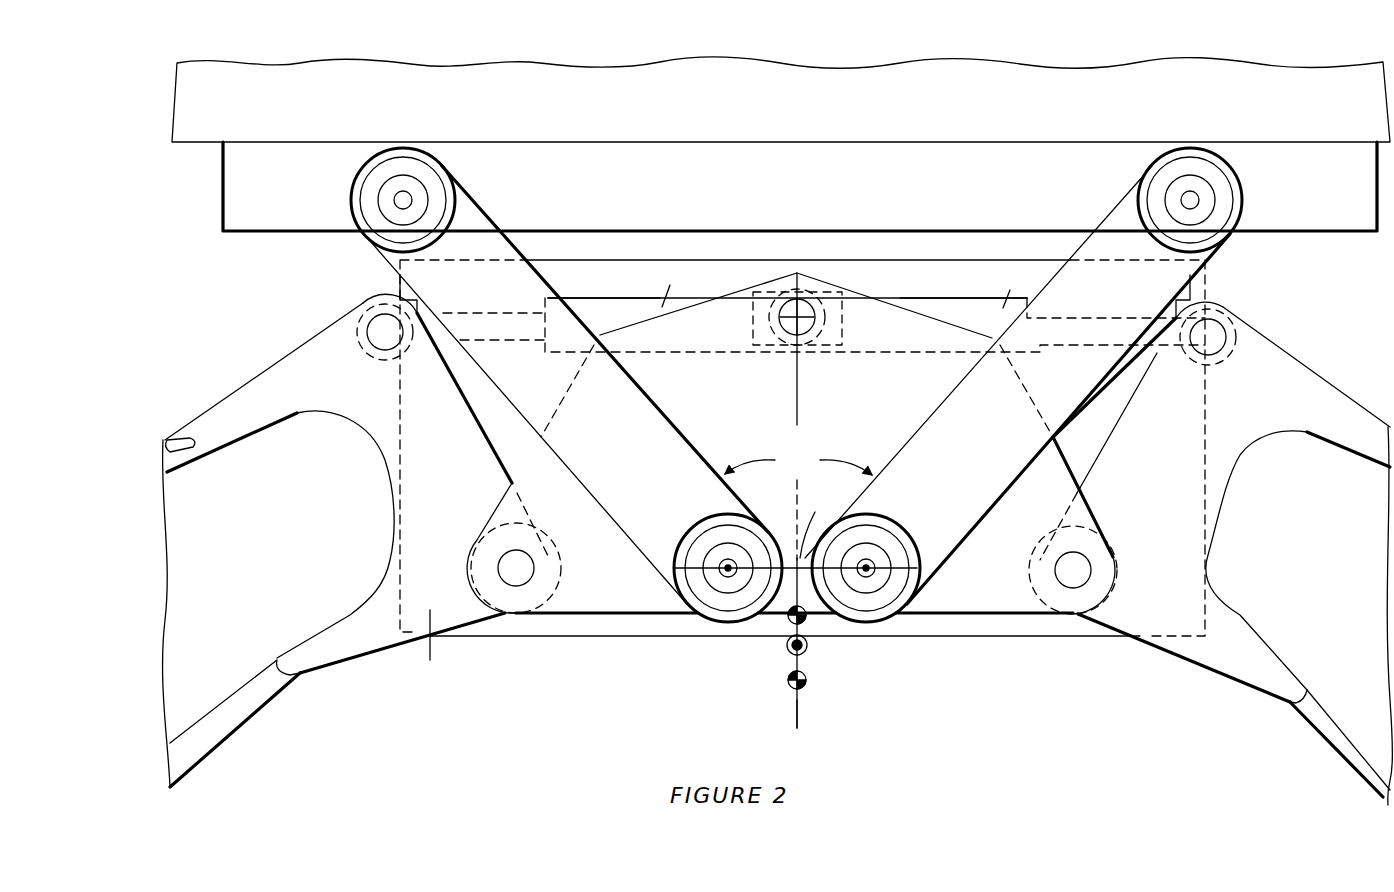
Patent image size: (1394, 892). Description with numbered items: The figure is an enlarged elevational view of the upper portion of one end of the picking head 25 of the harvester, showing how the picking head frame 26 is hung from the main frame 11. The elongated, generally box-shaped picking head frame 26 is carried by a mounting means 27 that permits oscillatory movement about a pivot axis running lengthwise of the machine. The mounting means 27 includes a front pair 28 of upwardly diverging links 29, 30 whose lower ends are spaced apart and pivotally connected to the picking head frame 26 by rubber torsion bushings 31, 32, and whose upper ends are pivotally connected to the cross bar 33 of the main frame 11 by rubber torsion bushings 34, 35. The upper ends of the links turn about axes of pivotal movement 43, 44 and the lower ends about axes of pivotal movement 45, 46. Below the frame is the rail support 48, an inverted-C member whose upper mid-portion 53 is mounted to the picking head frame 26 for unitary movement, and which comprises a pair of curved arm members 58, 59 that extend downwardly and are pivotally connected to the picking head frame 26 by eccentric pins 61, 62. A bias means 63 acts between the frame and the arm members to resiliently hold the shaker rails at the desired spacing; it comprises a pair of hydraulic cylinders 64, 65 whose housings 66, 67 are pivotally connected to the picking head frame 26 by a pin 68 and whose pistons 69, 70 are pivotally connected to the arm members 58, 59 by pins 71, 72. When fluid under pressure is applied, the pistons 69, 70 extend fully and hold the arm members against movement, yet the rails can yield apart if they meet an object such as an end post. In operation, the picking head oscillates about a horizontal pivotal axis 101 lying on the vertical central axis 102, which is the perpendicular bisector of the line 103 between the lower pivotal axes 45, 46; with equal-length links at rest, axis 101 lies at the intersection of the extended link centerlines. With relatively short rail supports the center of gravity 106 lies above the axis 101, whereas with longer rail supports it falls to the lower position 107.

The main frame 11 is at (457, 85).
The cross bar 33 is at (285, 220).
The rubber torsion bushing 34 is at (380, 178).
The rubber torsion bushing 35 is at (1222, 200).
The axis of pivotal movement 43 is at (412, 196).
The axis of pivotal movement 44 is at (1180, 202).
The link 29 is at (620, 388).
The link 30 is at (970, 395).
The bias means 63 is at (686, 282).
The hydraulic cylinder 64 is at (622, 296).
The hydraulic cylinder 65 is at (959, 296).
The housing 66 is at (664, 282).
The housing 67 is at (1009, 287).
The pin 68 is at (800, 314).
The pin 71 is at (380, 322).
The pin 72 is at (1212, 338).
The piston 69 is at (453, 342).
The piston 70 is at (1143, 345).
The eccentric pin 61 is at (514, 570).
The eccentric pin 62 is at (1075, 575).
The picking head frame 26 is at (1070, 640).
The mounting means 27 is at (583, 665).
The upper mid-portion 53 is at (1263, 623).
The picking head 25 is at (255, 358).
The curved arm member 58 is at (232, 462).
The curved arm member 59 is at (1320, 462).
The rail support 48 is at (262, 713).
The front pair of links 28 is at (798, 461).
The axis of pivotal movement 45 is at (728, 566).
The axis of pivotal movement 46 is at (868, 566).
The rubber torsion bushing 31 is at (700, 570).
The rubber torsion bushing 32 is at (893, 570).
The line between pivotal axes 103 is at (824, 523).
The center of gravity 106 is at (790, 620).
The horizontal pivotal axis 101 is at (812, 648).
The center of gravity 107 is at (788, 679).
The vertical central axis 102 is at (800, 710).